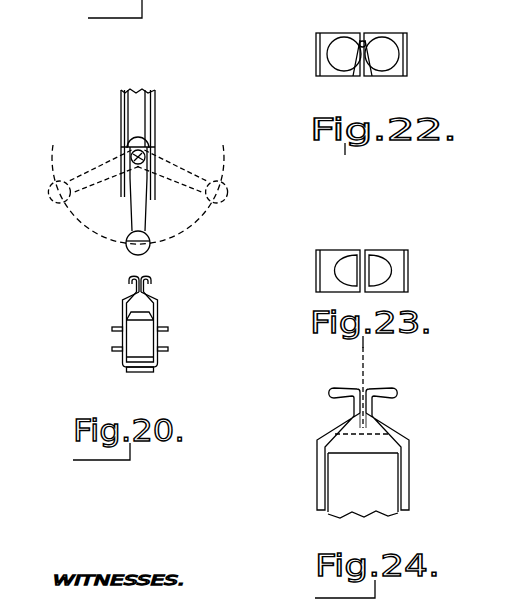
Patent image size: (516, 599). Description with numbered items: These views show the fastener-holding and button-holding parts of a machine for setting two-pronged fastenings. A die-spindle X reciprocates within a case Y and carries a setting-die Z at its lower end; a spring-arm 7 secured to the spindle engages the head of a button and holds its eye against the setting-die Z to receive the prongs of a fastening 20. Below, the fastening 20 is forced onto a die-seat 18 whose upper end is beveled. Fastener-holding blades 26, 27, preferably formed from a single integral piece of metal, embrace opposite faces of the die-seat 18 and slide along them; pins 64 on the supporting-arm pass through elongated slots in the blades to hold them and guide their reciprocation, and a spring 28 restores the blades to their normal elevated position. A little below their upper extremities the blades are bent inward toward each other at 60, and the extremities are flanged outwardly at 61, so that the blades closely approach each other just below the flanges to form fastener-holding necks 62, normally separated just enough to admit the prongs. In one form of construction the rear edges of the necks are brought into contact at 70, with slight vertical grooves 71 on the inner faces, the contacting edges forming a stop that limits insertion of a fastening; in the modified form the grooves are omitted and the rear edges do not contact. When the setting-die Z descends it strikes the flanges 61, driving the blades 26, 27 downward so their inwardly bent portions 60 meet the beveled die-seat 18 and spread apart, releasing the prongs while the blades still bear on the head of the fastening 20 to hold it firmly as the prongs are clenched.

In FIG. 20, the case Y is at (141, 112).
In FIG. 20, the spring-arm 7 is at (138, 196).
In FIG. 20, the die-spindle X is at (128, 216).
In FIG. 20, the setting-die Z is at (149, 224).
In FIG. 24, the two-pronged fastening 20 is at (372, 426).
In FIG. 20, the outwardly flanged extremities 61 is at (140, 277).
In FIG. 22, the outwardly flanged extremities 61 is at (377, 66).
In FIG. 23, the outwardly flanged extremities 61 is at (376, 265).
In FIG. 24, the outwardly flanged extremities 61 is at (345, 383).
In FIG. 20, the fastener-holding necks 62 is at (129, 283).
In FIG. 24, the fastener-holding necks 62 is at (355, 405).
In FIG. 20, the inwardly bent portions 60 is at (123, 300).
In FIG. 24, the inwardly bent portions 60 is at (338, 432).
In FIG. 20, the die-seat 18 is at (145, 319).
In FIG. 24, the die-seat 18 is at (348, 446).
In FIG. 20, the pins 64 is at (114, 329).
In FIG. 20, the fastener-holding blade 26 is at (114, 350).
In FIG. 22, the fastener-holding blade 26 is at (324, 52).
In FIG. 23, the fastener-holding blade 26 is at (325, 268).
In FIG. 24, the fastener-holding blade 26 is at (304, 477).
In FIG. 20, the fastener-holding blade 27 is at (165, 350).
In FIG. 22, the fastener-holding blade 27 is at (409, 53).
In FIG. 23, the fastener-holding blade 27 is at (410, 268).
In FIG. 24, the fastener-holding blade 27 is at (407, 483).
In FIG. 20, the spring 28 is at (140, 380).
In FIG. 22, the contacting rear edges 70 is at (358, 40).
In FIG. 22, the vertical grooves 71 is at (367, 40).